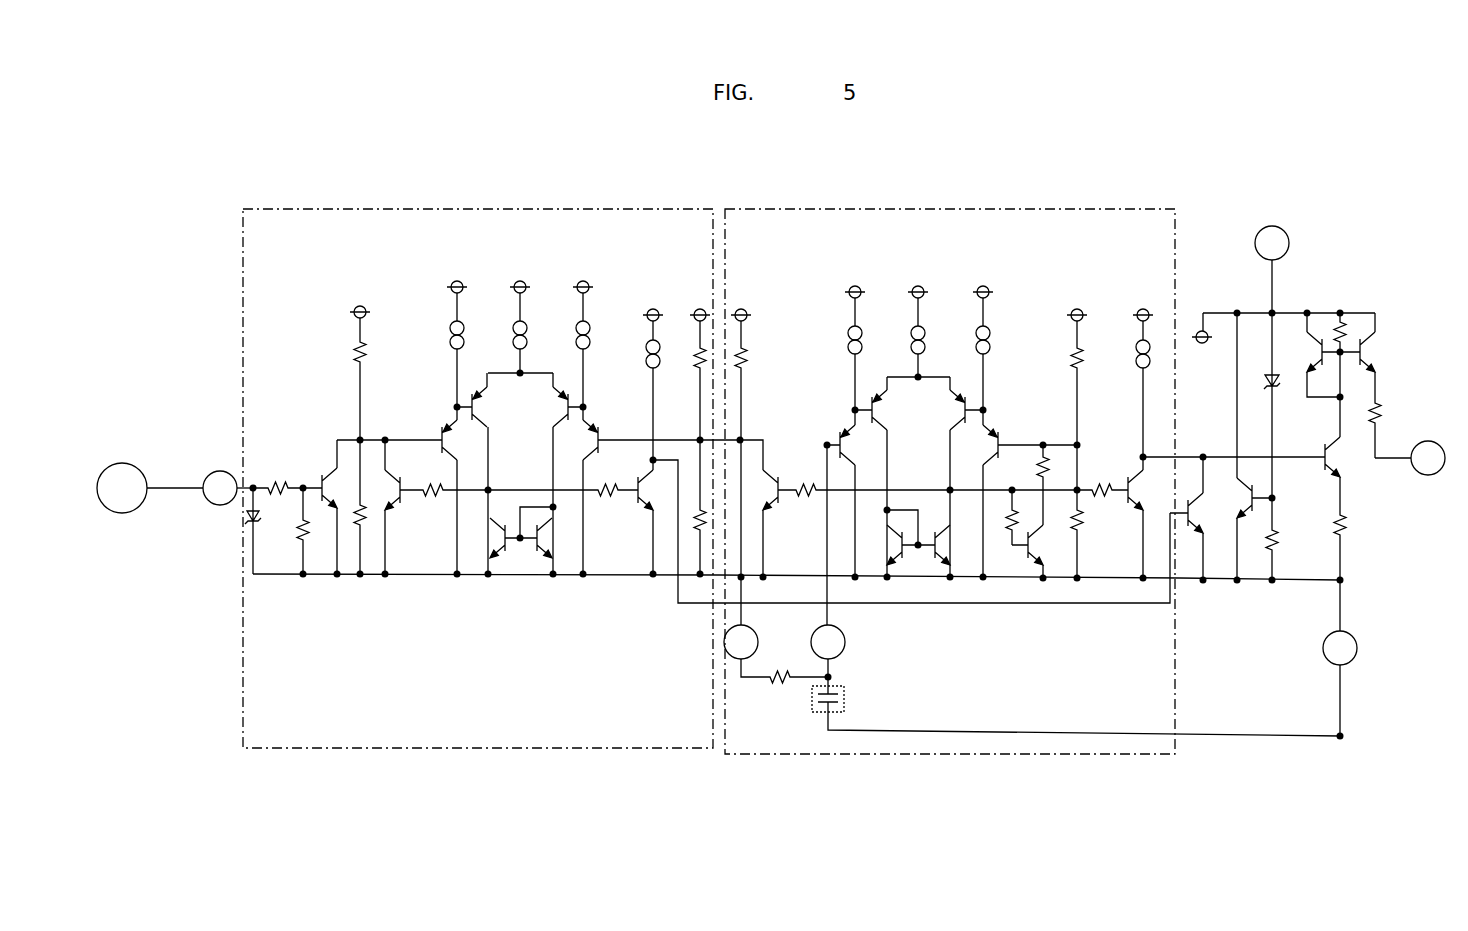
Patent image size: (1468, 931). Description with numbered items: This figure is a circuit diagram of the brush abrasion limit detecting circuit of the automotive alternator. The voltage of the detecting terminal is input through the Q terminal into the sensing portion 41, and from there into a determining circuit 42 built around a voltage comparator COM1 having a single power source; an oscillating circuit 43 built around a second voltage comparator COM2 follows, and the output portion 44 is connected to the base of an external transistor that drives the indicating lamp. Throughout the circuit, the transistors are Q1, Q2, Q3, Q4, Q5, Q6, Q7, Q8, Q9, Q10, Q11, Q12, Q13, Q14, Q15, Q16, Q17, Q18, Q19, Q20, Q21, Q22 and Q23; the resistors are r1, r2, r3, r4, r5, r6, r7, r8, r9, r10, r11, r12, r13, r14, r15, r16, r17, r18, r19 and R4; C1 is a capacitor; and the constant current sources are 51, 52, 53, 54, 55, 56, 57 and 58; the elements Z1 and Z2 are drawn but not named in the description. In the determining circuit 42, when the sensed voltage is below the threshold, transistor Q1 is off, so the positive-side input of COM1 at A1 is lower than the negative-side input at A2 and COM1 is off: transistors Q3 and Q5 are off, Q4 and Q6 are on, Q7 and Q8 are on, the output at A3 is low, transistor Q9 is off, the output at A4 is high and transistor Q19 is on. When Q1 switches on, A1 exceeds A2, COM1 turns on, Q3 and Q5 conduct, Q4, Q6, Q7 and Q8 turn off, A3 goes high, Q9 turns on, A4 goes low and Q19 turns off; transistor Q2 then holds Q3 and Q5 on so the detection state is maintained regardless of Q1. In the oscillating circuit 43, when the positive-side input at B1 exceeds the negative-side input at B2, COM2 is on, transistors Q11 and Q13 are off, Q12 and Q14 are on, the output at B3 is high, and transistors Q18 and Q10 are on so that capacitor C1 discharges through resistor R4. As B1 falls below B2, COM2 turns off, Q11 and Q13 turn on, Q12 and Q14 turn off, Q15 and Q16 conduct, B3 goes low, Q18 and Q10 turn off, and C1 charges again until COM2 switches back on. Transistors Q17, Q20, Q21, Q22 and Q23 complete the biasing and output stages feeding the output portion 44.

The sensing portion 41 is at (133, 462).
The determining circuit 42 is at (517, 207).
The oscillating circuit 43 is at (972, 207).
The output portion 44 is at (1431, 477).
The constant current source 51 is at (470, 344).
The constant current source 52 is at (533, 329).
The constant current source 53 is at (596, 346).
The constant current source 54 is at (640, 384).
The constant current source 55 is at (868, 348).
The constant current source 56 is at (931, 333).
The constant current source 57 is at (996, 350).
The constant current source 58 is at (1131, 383).
The zener diode Z1 is at (266, 530).
The zener diode Z2 is at (1285, 405).
The resistor r1 is at (280, 472).
The resistor r2 is at (313, 533).
The resistor r3 is at (372, 373).
The resistor r4 is at (366, 540).
The resistor r5 is at (453, 508).
The resistor r6 is at (608, 508).
The resistor r7 is at (689, 374).
The resistor r8 is at (688, 540).
The resistor r9 is at (753, 467).
The resistor r10 is at (868, 508).
The resistor r11 is at (1019, 530).
The resistor r12 is at (1037, 480).
The resistor r13 is at (1095, 377).
The resistor r14 is at (1098, 513).
The resistor r15 is at (1100, 478).
The resistor r16 is at (1292, 541).
The resistor r17 is at (1358, 360).
The resistor r18 is at (1363, 545).
The resistor r19 is at (1398, 428).
The resistor R4 is at (778, 672).
The capacitor C1 is at (1077, 682).
The transistor Q1 is at (319, 509).
The transistor Q2 is at (402, 507).
The transistor Q3 is at (488, 475).
The transistor Q4 is at (551, 475).
The transistor Q5 is at (454, 491).
The transistor Q6 is at (628, 492).
The transistor Q7 is at (491, 538).
The transistor Q8 is at (551, 531).
The transistor Q9 is at (639, 519).
The transistor Q10 is at (777, 510).
The transistor Q11 is at (893, 479).
The transistor Q12 is at (966, 393).
The transistor Q13 is at (832, 491).
The transistor Q14 is at (1012, 494).
The transistor Q15 is at (900, 565).
The transistor Q16 is at (937, 565).
The transistor Q17 is at (1030, 568).
The transistor Q18 is at (1121, 505).
The transistor Q19 is at (1227, 519).
The transistor Q20 is at (1278, 448).
The transistor Q21 is at (1320, 335).
The transistor Q22 is at (1382, 356).
The transistor Q23 is at (1352, 474).
The positive-side input of COM1 A1 is at (697, 437).
The negative-side input of COM1 A2 is at (356, 437).
The output of COM1 A3 is at (491, 489).
The output of determining circuit A4 is at (649, 462).
The positive-side input of COM2 B1 is at (822, 443).
The negative-side input of COM2 B2 is at (1075, 441).
The output of COM2 B3 is at (947, 489).
The voltage comparator COM1 is at (520, 415).
The voltage comparator COM2 is at (918, 418).